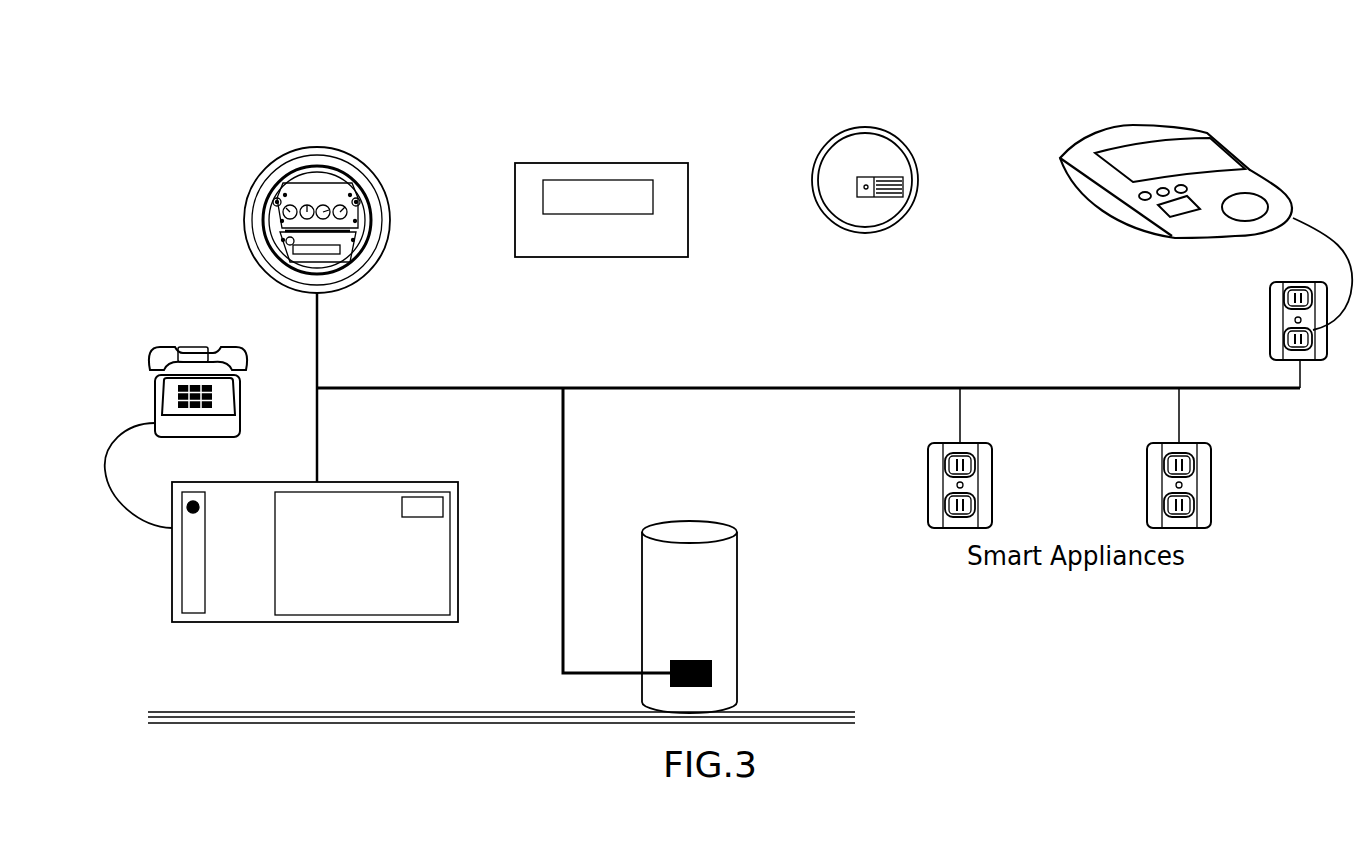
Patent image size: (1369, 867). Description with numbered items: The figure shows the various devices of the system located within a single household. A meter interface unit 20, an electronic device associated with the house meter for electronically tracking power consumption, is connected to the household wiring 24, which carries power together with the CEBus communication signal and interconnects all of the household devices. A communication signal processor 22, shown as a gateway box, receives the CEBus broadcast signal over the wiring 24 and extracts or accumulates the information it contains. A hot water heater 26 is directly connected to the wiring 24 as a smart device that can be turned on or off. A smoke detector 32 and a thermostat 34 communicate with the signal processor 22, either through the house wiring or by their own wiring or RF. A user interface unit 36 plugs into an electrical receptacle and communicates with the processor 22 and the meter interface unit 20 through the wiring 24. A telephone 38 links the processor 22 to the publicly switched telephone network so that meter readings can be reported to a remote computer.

The meter interface unit 20 is at (386, 218).
The communication signal processor 22 is at (440, 602).
The household wiring 24 is at (594, 407).
The hot water heater 26 is at (730, 628).
The smoke detector 32 is at (917, 190).
The thermostat 34 is at (522, 223).
The user interface unit 36 is at (1255, 175).
The telephone 38 is at (153, 392).